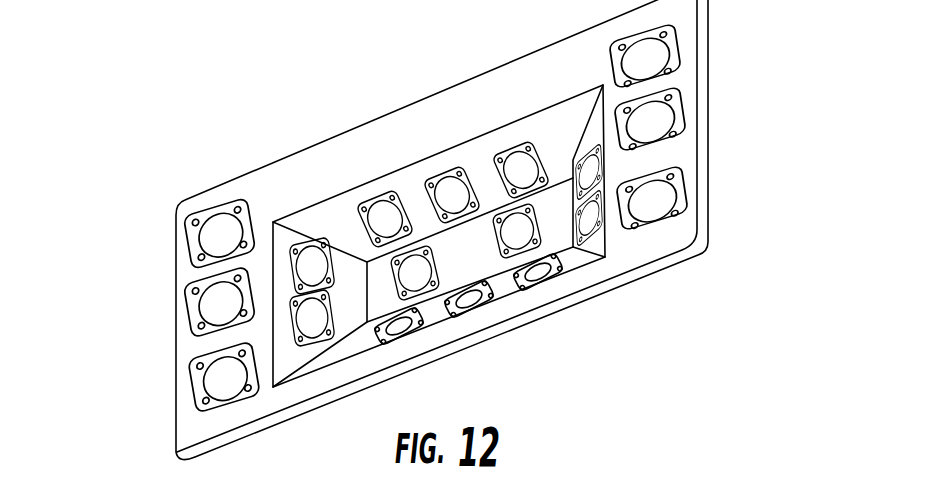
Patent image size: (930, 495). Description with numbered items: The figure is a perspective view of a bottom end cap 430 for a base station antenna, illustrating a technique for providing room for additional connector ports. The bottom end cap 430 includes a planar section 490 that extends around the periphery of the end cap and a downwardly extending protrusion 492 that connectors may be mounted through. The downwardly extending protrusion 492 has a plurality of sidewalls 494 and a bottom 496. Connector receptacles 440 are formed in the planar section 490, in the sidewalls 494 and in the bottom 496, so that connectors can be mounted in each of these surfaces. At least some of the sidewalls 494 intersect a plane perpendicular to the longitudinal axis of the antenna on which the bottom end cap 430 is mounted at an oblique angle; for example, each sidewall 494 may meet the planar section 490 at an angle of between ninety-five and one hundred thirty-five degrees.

The bottom end cap 430 is at (350, 62).
The connector receptacles 440 is at (198, 213).
The planar section 490 is at (193, 278).
The downwardly extending protrusion 492 is at (447, 125).
The sidewalls 494 is at (405, 185).
The bottom 496 is at (418, 320).